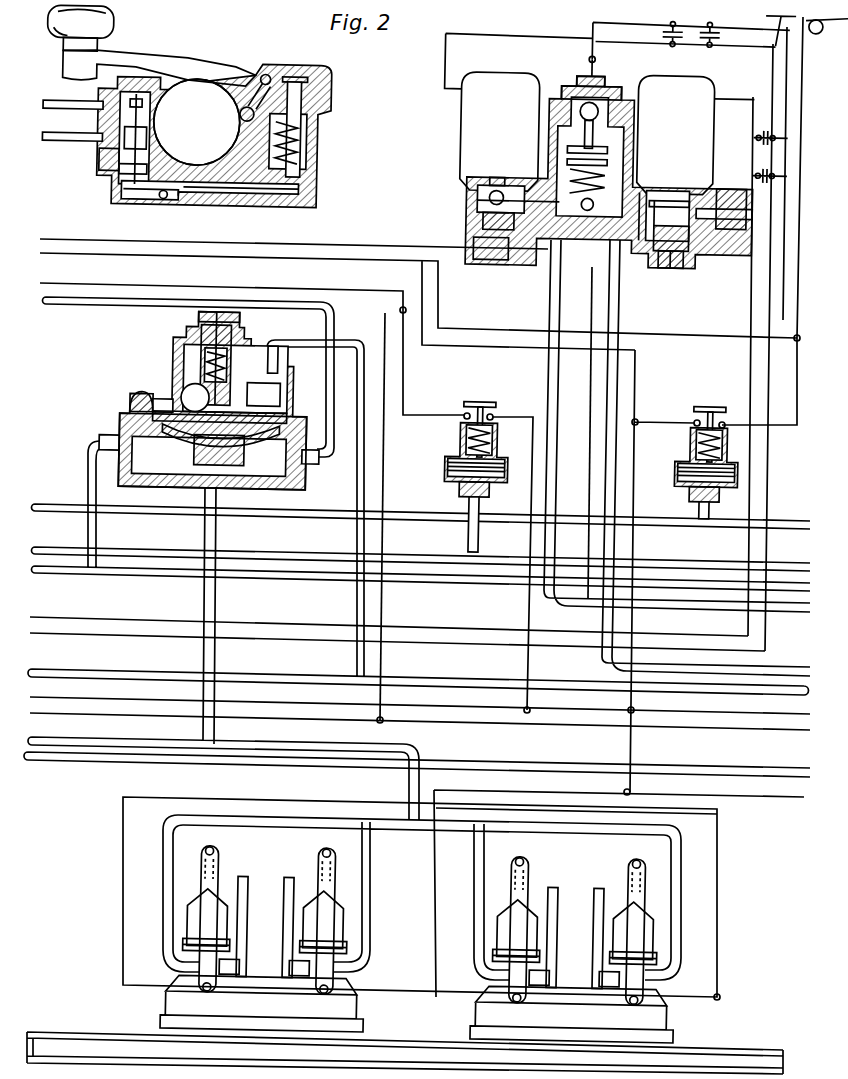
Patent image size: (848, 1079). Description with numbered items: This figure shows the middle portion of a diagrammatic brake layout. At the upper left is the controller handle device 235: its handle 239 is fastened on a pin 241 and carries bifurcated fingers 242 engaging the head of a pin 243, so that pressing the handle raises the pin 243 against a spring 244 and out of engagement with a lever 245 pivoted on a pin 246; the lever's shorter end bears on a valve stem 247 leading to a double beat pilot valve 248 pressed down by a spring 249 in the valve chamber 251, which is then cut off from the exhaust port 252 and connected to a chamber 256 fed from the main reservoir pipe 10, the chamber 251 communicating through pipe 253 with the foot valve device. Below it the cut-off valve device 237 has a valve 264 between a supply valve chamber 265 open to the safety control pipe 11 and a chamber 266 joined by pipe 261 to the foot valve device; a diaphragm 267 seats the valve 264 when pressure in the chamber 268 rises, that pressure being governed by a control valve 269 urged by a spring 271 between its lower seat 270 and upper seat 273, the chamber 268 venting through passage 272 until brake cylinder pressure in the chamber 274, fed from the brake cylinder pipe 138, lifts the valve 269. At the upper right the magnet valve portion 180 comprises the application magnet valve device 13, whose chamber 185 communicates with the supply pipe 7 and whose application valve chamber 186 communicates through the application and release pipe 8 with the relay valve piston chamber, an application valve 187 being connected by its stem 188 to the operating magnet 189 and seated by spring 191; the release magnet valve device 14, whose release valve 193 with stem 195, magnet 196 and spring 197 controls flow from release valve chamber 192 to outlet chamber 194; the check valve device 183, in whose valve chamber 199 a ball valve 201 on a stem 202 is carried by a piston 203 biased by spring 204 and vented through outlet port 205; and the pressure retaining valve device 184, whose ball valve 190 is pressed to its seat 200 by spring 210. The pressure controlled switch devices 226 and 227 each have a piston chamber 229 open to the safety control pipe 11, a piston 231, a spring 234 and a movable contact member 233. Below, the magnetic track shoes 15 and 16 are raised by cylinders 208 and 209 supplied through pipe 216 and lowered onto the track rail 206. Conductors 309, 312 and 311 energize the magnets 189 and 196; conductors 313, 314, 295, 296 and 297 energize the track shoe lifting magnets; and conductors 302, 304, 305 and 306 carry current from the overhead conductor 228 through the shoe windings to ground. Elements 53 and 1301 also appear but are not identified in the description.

The supply pipe 7 is at (562, 255).
The application and release pipe 8 is at (601, 270).
The main reservoir pipe 10 is at (72, 103).
The safety control pipe 11 is at (88, 460).
The application magnet valve device 13 is at (625, 161).
The release magnet valve device 14 is at (680, 80).
The magnetic track shoe 15 is at (374, 940).
The magnetic track shoe 16 is at (556, 949).
The pipe 53 is at (75, 503).
The brake cylinder pipe 138 is at (155, 670).
The magnet valve portion 180 is at (585, 72).
The check valve device 183 is at (598, 75).
The pressure retaining valve device 184 is at (756, 158).
The chamber 185 is at (484, 224).
The application valve chamber 186 is at (490, 200).
The application valve 187 is at (478, 195).
The stem 188 is at (495, 185).
The operating magnet 189 is at (470, 122).
The ball valve 190 is at (710, 215).
The spring 191 is at (478, 245).
The release valve chamber 192 is at (695, 240).
The release valve 193 is at (688, 258).
The outlet chamber 194 is at (641, 245).
The valve stem 195 is at (655, 262).
The magnet 196 is at (695, 118).
The spring 197 is at (672, 270).
The valve chamber 199 is at (603, 98).
The seat 200 is at (693, 210).
The ball valve 201 is at (598, 112).
The stem 202 is at (594, 130).
The piston 203 is at (608, 150).
The spring 204 is at (608, 178).
The outlet port 205 is at (580, 205).
The track rail 206 is at (88, 1032).
The raising cylinder 208 is at (220, 892).
The raising cylinder 209 is at (312, 895).
The spring 210 is at (735, 185).
The pipe 216 is at (155, 738).
The automatic safety control switch 226 is at (589, 471).
The safety control automatic pressure switch 227 is at (689, 463).
The overhead conductor 228 is at (764, 41).
The piston chamber 229 is at (463, 490).
The piston 231 is at (458, 470).
The movable contact member 233 is at (495, 405).
The spring 234 is at (462, 440).
The controller handle device 235 is at (216, 123).
The cut-off valve device 237 is at (198, 410).
The handle 239 is at (100, 33).
The pin 241 is at (255, 105).
The bifurcated fingers 242 is at (303, 84).
The pin 243 is at (300, 104).
The spring 244 is at (305, 138).
The lever 245 is at (305, 183).
The pin 246 is at (163, 200).
The valve stem 247 is at (128, 192).
The double beat pilot valve 248 is at (115, 162).
The spring 249 is at (160, 130).
The valve chamber 251 is at (130, 138).
The exhaust port 252 is at (130, 170).
The pipe 253 is at (88, 134).
The chamber 256 is at (150, 88).
The pipe 261 is at (97, 305).
The valve 264 is at (240, 430).
The supply valve chamber 265 is at (135, 455).
The chamber 266 is at (275, 452).
The diaphragm 267 is at (130, 403).
The chamber 268 is at (167, 408).
The control valve 269 is at (193, 395).
The seat 270 is at (272, 392).
The spring 271 is at (282, 365).
The passage 272 is at (190, 330).
The upper seat 273 is at (240, 345).
The chamber 274 is at (278, 365).
The conductor 295 is at (38, 697).
The conductor 296 is at (38, 713).
The conductor 297 is at (383, 618).
The conductor 302 is at (272, 250).
The conductor 304 is at (222, 240).
The conductor 305 is at (630, 752).
The conductor 306 is at (123, 905).
The conductor 309 is at (38, 633).
The conductor 311 is at (590, 32).
The conductor 312 is at (48, 618).
The conductor 313 is at (357, 280).
The conductor 314 is at (527, 612).
The wire 1301 is at (800, 87).